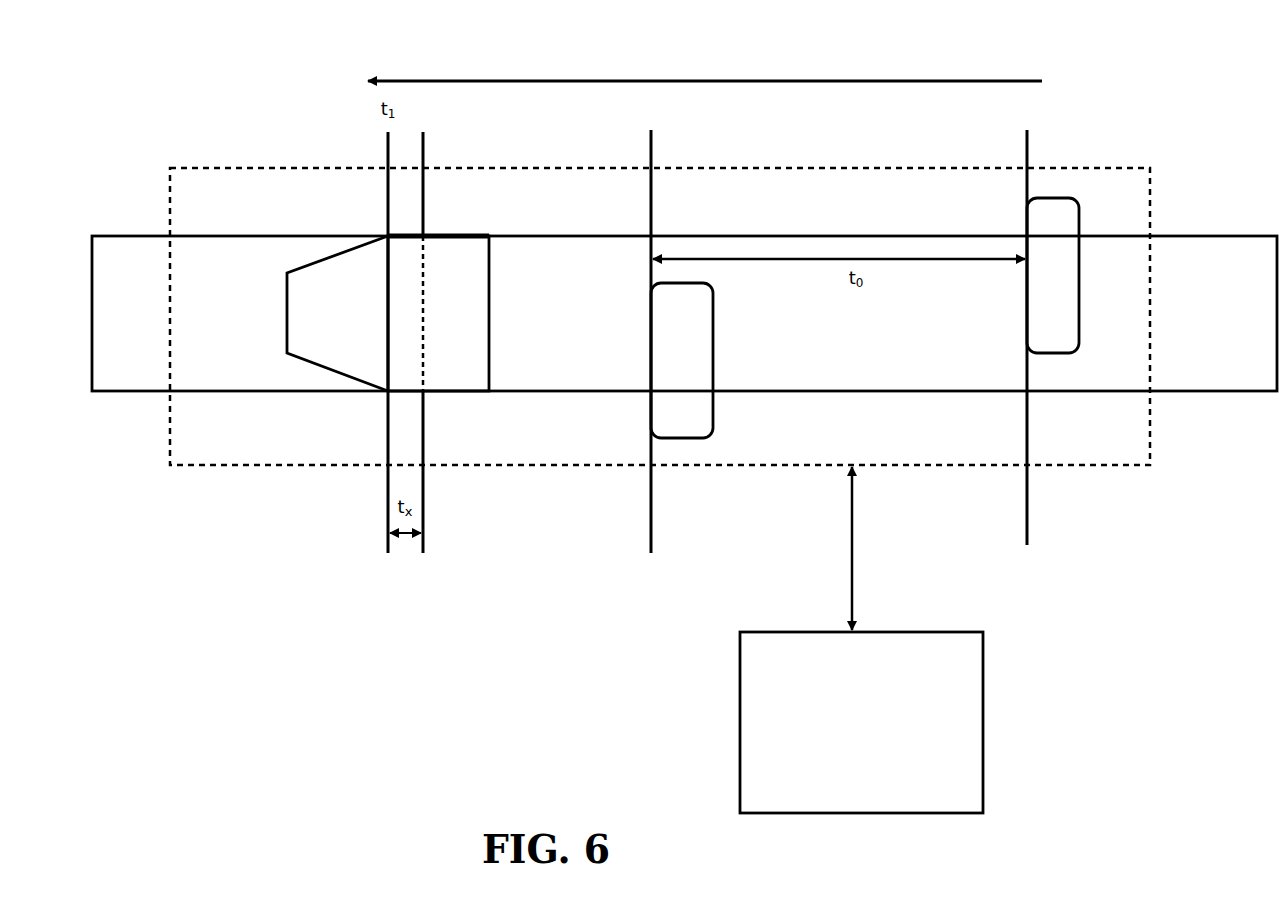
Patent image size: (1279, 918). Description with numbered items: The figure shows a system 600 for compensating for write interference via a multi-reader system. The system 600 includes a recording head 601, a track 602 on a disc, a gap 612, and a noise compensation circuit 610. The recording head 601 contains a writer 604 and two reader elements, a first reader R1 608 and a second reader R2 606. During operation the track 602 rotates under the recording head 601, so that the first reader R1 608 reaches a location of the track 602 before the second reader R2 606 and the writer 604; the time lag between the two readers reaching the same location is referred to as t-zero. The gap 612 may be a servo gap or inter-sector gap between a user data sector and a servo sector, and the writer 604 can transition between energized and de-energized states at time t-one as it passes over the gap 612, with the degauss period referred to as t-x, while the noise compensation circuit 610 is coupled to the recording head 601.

The system 600 is at (222, 52).
The recording head 601 is at (320, 166).
The track 602 is at (145, 255).
The writer 604 is at (302, 308).
The second reader R2 606 is at (680, 325).
The first reader R1 608 is at (1038, 233).
The noise compensation circuit 610 is at (765, 657).
The gap 612 is at (460, 248).